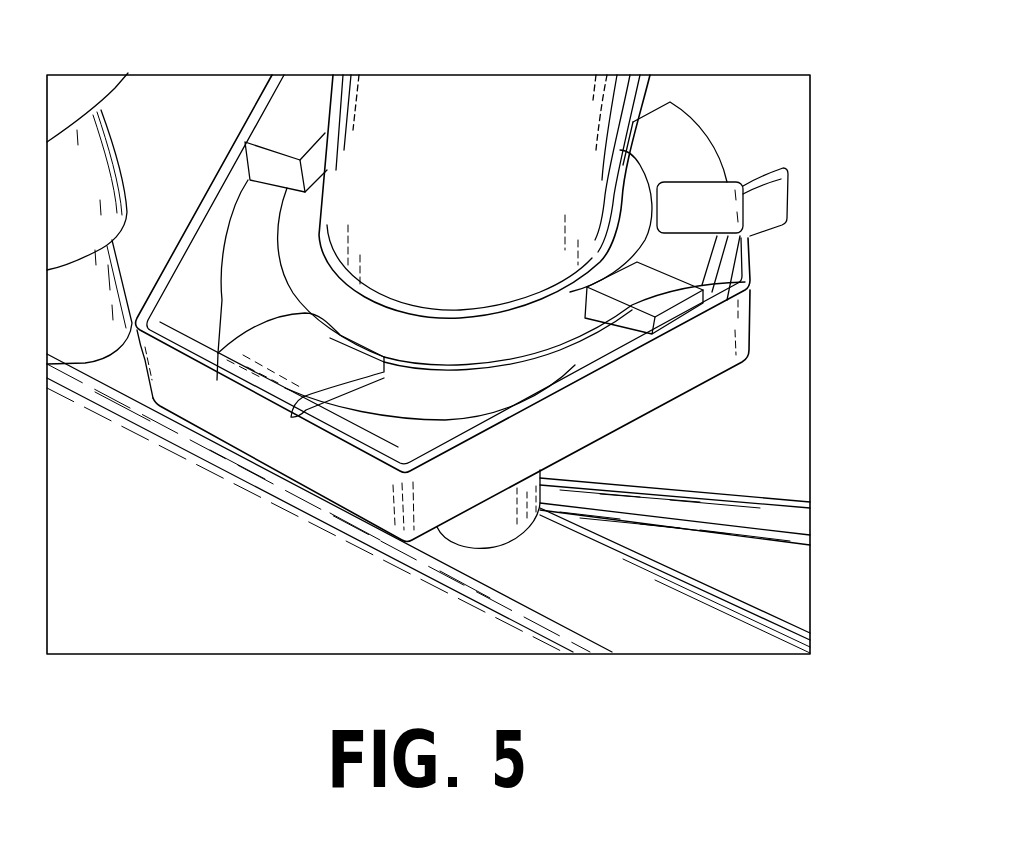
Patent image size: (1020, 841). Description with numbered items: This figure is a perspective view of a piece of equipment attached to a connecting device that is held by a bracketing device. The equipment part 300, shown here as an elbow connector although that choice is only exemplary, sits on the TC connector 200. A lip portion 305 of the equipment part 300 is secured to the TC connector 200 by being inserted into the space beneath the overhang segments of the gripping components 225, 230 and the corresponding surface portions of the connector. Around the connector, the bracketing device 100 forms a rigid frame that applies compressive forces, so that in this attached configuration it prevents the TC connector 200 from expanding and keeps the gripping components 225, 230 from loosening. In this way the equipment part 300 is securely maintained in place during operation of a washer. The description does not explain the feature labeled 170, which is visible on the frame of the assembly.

The inductor assembly 100 is at (202, 168).
The spring tab 170 is at (333, 353).
The housing frame 200 is at (502, 391).
The clip 225 is at (672, 271).
The support block 230 is at (292, 130).
The coil core 300 is at (470, 107).
The core bottom flange 305 is at (510, 328).